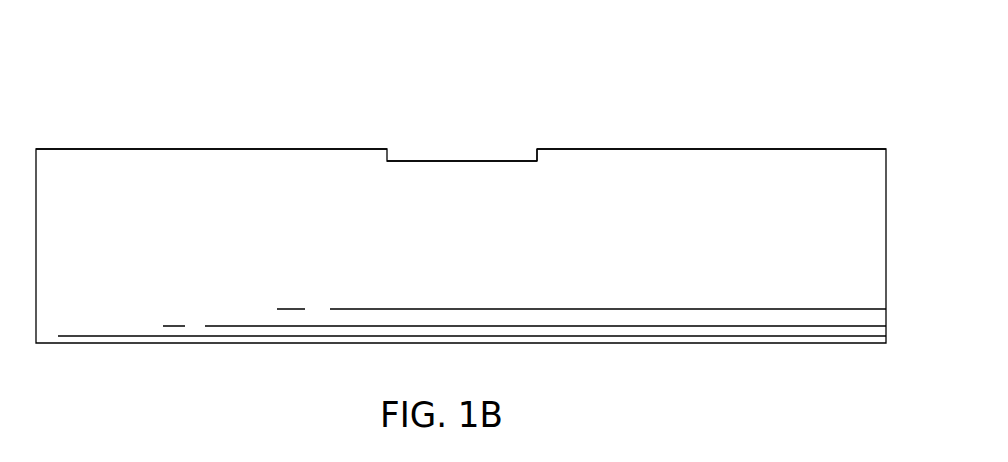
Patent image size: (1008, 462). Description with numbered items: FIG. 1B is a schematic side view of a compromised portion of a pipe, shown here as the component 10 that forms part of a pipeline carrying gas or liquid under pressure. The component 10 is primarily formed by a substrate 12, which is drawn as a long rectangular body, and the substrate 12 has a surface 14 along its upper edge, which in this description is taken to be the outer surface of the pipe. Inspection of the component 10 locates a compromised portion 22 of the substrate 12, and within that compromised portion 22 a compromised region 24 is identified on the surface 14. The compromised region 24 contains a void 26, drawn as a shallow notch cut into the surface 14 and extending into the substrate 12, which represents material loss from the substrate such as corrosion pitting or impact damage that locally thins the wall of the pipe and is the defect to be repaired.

The component 10 is at (763, 97).
The substrate 12 is at (598, 149).
The surface 14 is at (645, 195).
The compromised portion 22 is at (333, 183).
The compromised region 24 is at (517, 161).
The void 26 is at (491, 161).